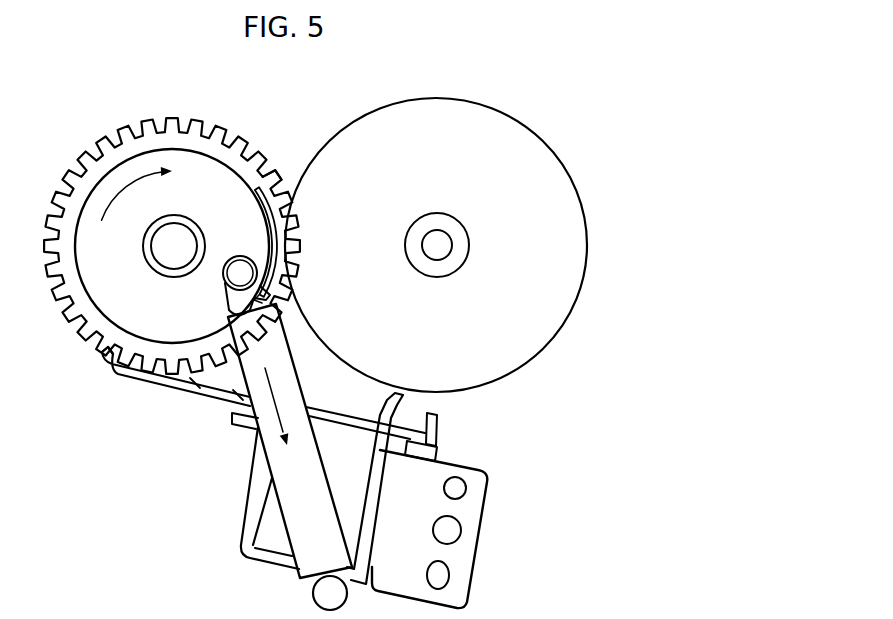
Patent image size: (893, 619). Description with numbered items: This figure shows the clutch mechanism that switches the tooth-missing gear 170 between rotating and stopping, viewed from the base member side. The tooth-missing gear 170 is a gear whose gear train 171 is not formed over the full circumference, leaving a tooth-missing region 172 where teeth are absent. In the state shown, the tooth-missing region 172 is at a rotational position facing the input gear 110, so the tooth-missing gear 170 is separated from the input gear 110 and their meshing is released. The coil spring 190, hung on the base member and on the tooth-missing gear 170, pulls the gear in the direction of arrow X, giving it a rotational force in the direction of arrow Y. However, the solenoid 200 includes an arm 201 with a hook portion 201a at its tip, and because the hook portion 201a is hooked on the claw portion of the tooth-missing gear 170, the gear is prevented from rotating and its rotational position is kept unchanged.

The input gear 110 is at (487, 128).
The tooth-missing gear 170 is at (122, 175).
The gear train 171 is at (216, 110).
The tooth-missing region 172 is at (291, 204).
The coil spring 190 is at (288, 495).
The solenoid 200 is at (462, 438).
The arm 201 is at (197, 385).
The hook portion 201a is at (102, 352).